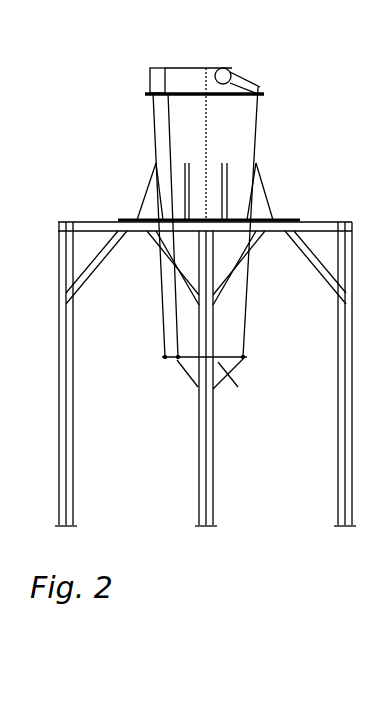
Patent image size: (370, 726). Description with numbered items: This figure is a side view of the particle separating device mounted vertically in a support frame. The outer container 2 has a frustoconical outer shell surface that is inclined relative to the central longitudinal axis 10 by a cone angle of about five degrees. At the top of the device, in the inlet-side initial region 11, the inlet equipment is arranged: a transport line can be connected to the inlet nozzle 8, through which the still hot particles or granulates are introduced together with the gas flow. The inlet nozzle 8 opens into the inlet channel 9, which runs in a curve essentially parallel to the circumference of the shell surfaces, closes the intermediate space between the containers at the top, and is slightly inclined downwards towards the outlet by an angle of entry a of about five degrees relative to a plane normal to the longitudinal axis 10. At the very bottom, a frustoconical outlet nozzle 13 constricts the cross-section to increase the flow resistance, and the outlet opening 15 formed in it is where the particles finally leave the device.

The outer container 2 is at (242, 141).
The inlet nozzle 8 is at (198, 67).
The inlet channel 9 is at (163, 72).
The inclined angle of entry a is at (274, 110).
The central longitudinal axis 10 is at (207, 132).
The inlet-side initial region 11 is at (165, 95).
The outlet nozzle 13 is at (244, 389).
The outlet opening 15 is at (197, 390).